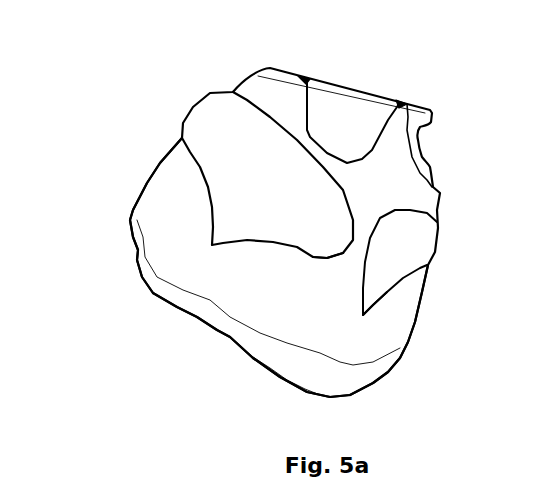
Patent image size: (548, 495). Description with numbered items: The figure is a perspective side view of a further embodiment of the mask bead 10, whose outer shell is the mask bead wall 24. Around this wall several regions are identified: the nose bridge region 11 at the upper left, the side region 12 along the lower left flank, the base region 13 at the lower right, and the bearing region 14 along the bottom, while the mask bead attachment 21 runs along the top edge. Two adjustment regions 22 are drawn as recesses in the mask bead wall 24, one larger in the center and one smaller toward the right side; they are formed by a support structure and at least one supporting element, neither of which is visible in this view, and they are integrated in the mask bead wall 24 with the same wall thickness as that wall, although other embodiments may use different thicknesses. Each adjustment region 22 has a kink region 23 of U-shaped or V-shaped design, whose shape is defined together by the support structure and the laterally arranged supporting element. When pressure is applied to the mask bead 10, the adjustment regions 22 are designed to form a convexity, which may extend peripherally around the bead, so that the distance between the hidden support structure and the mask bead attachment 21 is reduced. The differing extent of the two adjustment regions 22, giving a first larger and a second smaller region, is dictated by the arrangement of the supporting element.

The mask bead 10 is at (148, 138).
The nose bridge region 11 is at (110, 235).
The side region 12 is at (208, 310).
The base region 13 is at (403, 369).
The bearing region 14 is at (255, 360).
The mask bead attachment 21 is at (292, 85).
The adjustment region 22 is at (232, 150).
The kink region 23 is at (337, 248).
The mask bead wall 24 is at (150, 178).